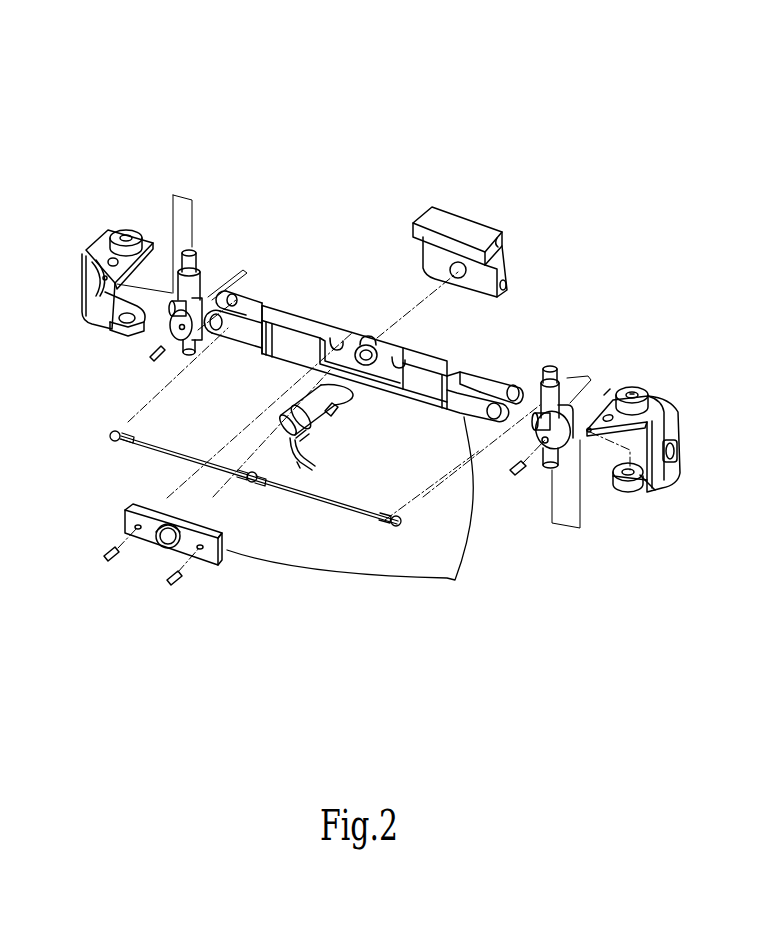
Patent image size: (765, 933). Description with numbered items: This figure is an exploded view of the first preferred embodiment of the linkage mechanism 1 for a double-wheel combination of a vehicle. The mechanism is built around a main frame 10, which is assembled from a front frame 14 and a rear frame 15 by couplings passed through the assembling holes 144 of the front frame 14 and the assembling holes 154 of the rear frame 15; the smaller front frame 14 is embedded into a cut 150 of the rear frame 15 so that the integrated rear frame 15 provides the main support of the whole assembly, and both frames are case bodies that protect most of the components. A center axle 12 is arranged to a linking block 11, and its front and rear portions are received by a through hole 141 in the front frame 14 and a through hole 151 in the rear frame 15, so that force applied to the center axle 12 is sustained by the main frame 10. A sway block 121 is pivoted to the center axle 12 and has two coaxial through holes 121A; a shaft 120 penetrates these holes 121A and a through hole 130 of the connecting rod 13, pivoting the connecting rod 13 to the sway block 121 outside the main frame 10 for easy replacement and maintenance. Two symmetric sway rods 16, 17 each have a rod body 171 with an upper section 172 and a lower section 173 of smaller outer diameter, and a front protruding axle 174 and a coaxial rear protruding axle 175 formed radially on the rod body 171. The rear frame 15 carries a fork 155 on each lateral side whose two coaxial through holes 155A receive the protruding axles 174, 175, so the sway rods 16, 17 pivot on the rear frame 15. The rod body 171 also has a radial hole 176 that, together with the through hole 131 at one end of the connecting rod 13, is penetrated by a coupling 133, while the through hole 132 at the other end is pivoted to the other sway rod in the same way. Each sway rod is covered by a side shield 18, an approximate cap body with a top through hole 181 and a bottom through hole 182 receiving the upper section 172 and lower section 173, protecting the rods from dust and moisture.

The steering mechanism assembly 1 is at (290, 167).
The main frame 10 is at (351, 513).
The linking block 11 is at (500, 237).
The center axle 12 is at (287, 408).
The shaft 120 is at (335, 410).
The sway block 121 is at (303, 447).
The through holes 121A is at (297, 465).
The connecting rod 13 is at (200, 450).
The through hole 130 is at (253, 482).
The through hole 131 is at (393, 528).
The through hole 132 is at (116, 440).
The pin 133 is at (510, 478).
The front frame 14 is at (148, 573).
The through hole 141 is at (160, 548).
The assembling holes 144 is at (200, 548).
The rear frame 15 is at (437, 347).
The cut 150 is at (395, 383).
The through hole 151 is at (364, 345).
The assembling holes 154 is at (400, 347).
The fork 155 is at (483, 380).
The through holes 155A is at (507, 392).
The sway rod 16 is at (212, 262).
The sway rod 17 is at (572, 364).
The rod body 171 is at (565, 398).
The upper section 172 is at (555, 370).
The lower section 173 is at (553, 466).
The front protruding axle 174 is at (535, 422).
The rear protruding axle 175 is at (608, 386).
The radial hole 176 is at (543, 462).
The side shield 18 is at (97, 337).
The through hole 181 is at (637, 393).
The through hole 182 is at (650, 492).